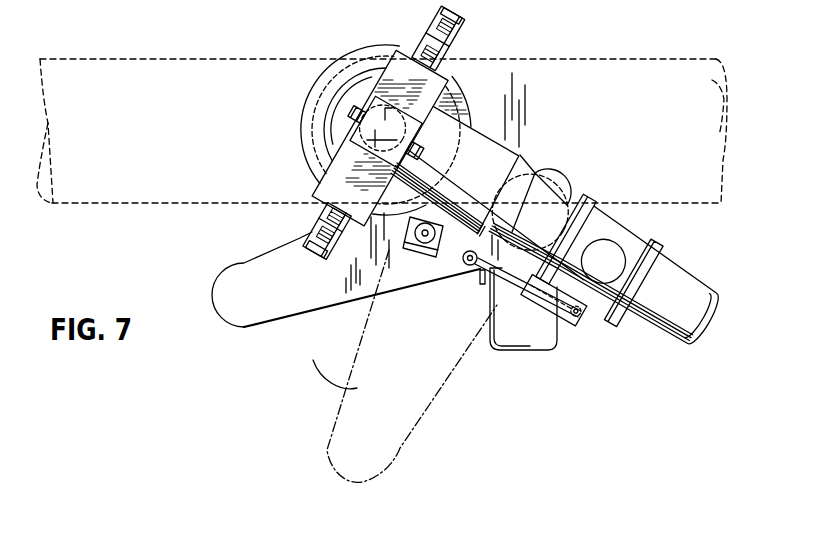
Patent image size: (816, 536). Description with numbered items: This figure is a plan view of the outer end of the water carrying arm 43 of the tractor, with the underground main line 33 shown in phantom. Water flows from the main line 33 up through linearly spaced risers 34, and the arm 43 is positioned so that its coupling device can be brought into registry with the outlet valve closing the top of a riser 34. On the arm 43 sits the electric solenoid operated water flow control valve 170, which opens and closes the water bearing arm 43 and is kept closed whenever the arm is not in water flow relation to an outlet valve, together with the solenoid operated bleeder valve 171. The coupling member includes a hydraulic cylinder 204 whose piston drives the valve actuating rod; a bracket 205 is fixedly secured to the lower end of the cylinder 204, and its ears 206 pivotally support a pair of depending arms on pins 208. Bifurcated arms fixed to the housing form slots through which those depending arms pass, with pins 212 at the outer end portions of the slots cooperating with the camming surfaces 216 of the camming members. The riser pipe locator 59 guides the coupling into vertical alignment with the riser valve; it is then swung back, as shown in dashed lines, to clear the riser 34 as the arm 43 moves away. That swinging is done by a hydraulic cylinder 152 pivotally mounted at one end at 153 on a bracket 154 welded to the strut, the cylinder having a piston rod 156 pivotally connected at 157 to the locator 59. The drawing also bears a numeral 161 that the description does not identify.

The underground main line 33 is at (159, 58).
The riser 34 is at (292, 121).
The water carrying arm 43 is at (677, 318).
The riser pipe locator 59 is at (309, 303).
The hydraulic cylinder 152 is at (541, 297).
The pivotal mounting 153 is at (556, 325).
The bracket 154 is at (582, 320).
The piston rod 156 is at (520, 285).
The pivotal connection 157 is at (465, 266).
The cup wall 161 is at (496, 352).
The solenoid operated water flow control valve 170 is at (616, 252).
The solenoid operated bleeder valve 171 is at (420, 242).
The hydraulic cylinder 204 is at (386, 131).
The bracket 205 is at (387, 78).
The ears 206 is at (415, 46).
The pins 208 is at (447, 58).
The pins 212 is at (436, 17).
The camming surfaces 216 is at (452, 17).